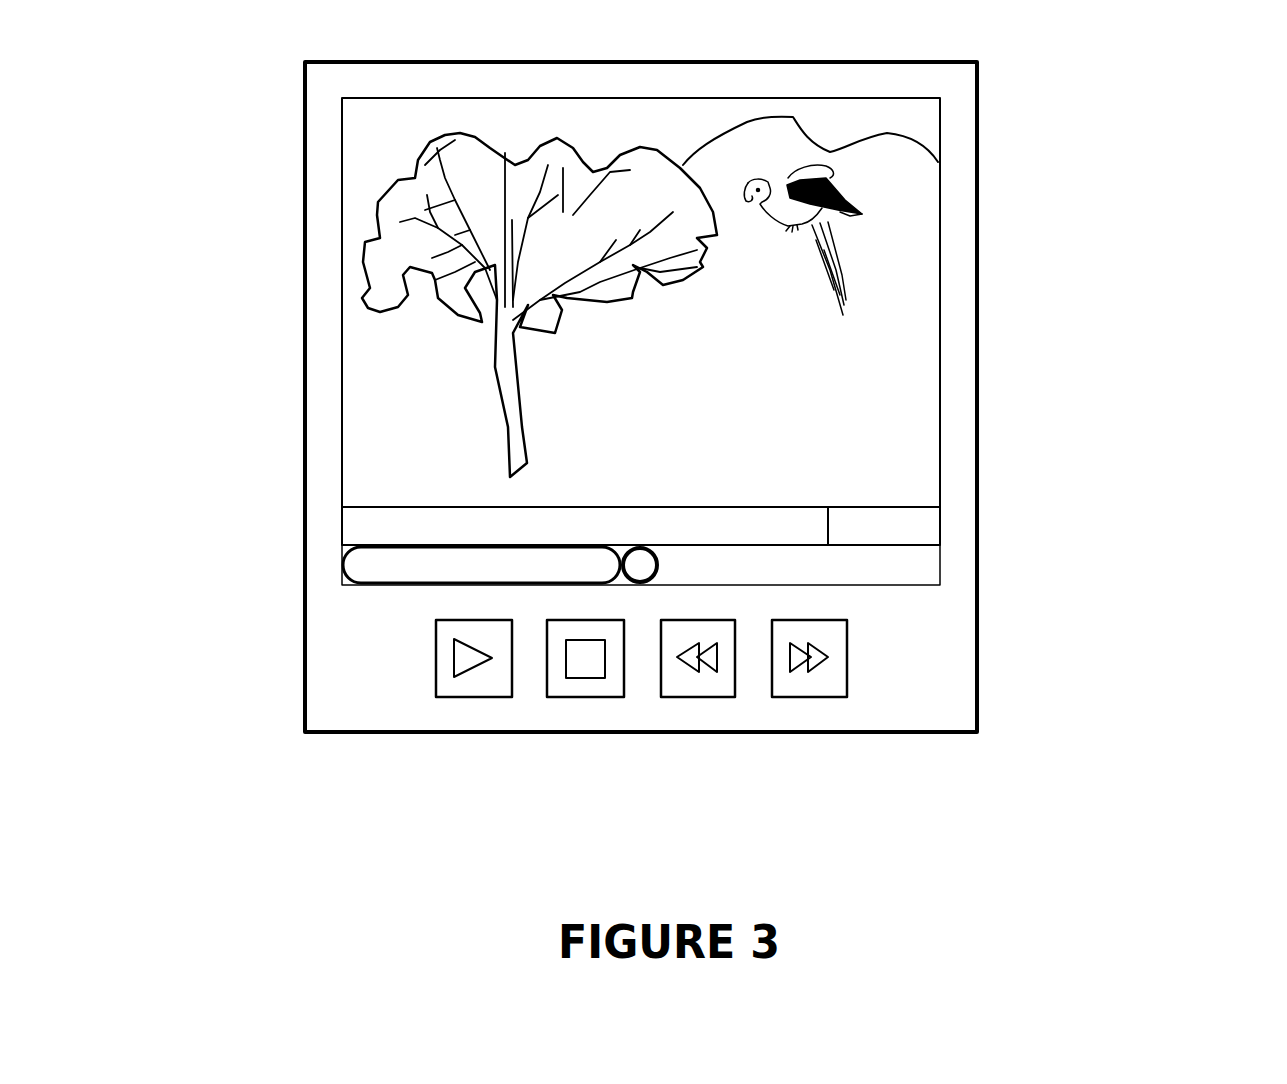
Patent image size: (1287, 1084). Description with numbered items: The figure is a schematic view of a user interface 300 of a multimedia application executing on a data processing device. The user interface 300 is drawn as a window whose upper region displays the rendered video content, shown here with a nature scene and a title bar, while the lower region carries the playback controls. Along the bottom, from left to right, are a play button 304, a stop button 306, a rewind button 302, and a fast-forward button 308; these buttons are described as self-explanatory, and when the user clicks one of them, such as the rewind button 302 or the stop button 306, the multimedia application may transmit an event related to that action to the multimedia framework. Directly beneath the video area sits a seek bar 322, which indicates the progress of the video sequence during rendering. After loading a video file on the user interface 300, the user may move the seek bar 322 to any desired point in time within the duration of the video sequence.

The user interface 300 is at (701, 450).
The rewind button 302 is at (698, 685).
The play button 304 is at (448, 659).
The stop button 306 is at (585, 685).
The fast-forward button 308 is at (808, 685).
The seek bar 322 is at (342, 563).